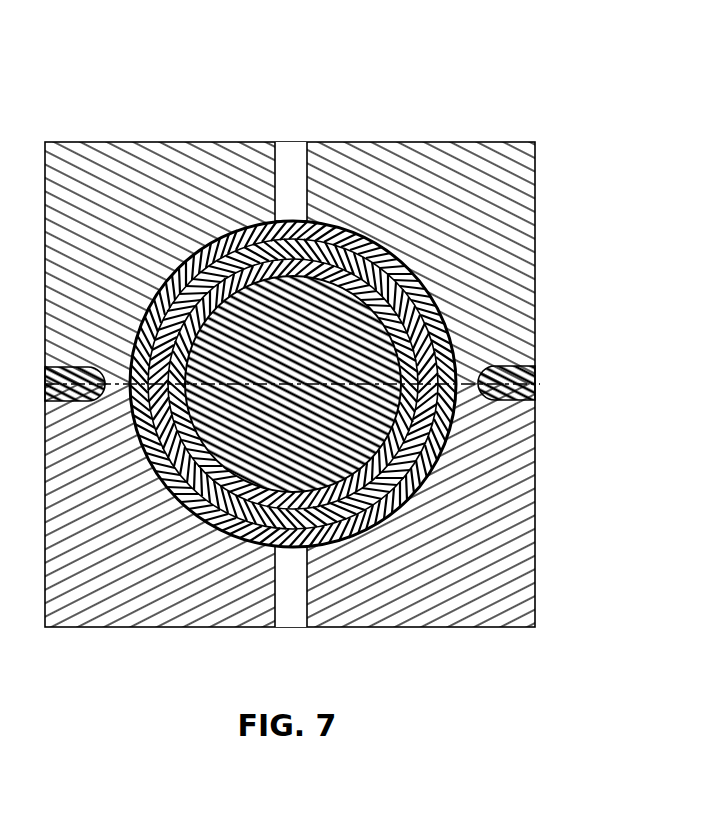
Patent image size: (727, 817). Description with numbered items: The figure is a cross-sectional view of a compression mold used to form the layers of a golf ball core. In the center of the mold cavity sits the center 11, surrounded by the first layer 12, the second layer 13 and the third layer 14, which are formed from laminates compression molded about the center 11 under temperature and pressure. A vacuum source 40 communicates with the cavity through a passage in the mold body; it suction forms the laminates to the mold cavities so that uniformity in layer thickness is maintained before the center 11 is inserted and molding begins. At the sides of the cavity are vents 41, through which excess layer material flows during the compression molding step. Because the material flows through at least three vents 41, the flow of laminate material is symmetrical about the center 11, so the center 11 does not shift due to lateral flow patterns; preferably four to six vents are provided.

The vacuum source 40 is at (290, 168).
The vent 41 is at (535, 377).
The center 11 is at (350, 343).
The first layer 12 is at (437, 420).
The second layer 13 is at (398, 462).
The third layer 14 is at (372, 510).